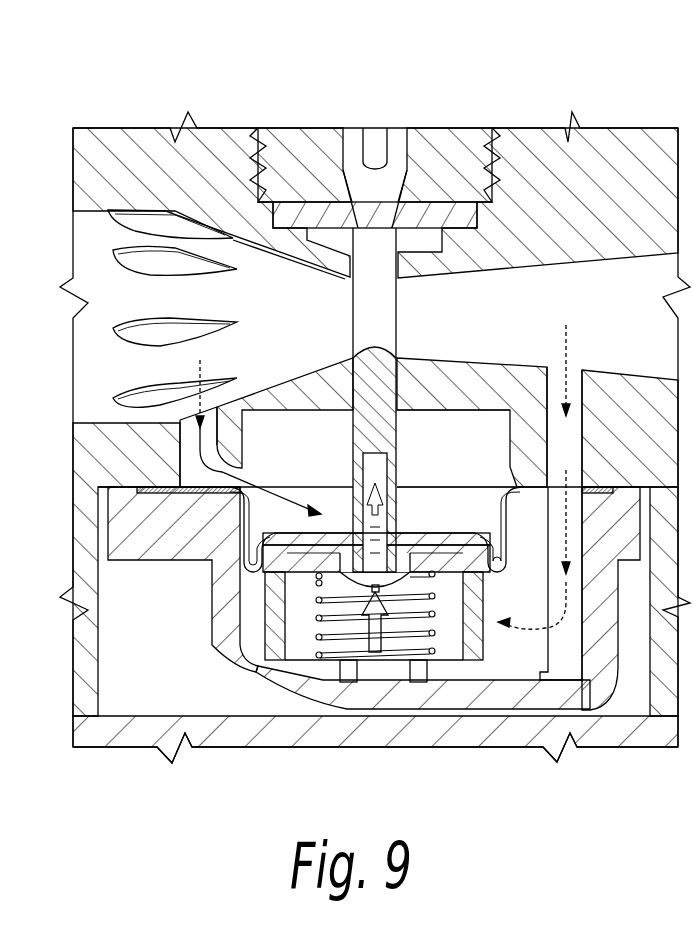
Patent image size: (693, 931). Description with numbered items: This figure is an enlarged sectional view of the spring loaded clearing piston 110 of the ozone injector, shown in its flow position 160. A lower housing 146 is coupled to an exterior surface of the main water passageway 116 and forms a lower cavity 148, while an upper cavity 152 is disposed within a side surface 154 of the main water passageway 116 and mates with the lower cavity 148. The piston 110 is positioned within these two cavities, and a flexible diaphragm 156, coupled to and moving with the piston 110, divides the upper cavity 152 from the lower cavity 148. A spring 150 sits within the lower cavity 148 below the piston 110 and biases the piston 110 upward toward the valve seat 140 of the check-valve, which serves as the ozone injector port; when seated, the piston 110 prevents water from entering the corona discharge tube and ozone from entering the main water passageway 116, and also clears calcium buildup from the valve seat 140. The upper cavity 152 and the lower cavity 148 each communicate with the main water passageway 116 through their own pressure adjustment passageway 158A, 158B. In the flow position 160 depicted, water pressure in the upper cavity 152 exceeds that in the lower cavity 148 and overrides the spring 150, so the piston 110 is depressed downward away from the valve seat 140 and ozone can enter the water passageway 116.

The spring loaded clearing piston 110 is at (378, 352).
The main water passageway 116 is at (440, 297).
The valve seat 140 is at (440, 213).
The lower housing 146 is at (240, 664).
The lower cavity 148 is at (253, 630).
The spring 150 is at (347, 642).
The upper cavity 152 is at (467, 440).
The side surface 154 is at (505, 385).
The flexible diaphragm 156 is at (252, 593).
The pressure adjustment passageway 158A is at (563, 655).
The pressure adjustment passageway 158B is at (190, 457).
The flow position 160 is at (398, 110).